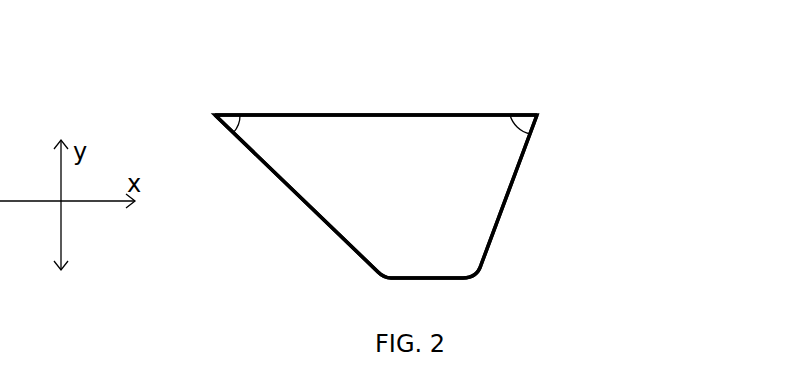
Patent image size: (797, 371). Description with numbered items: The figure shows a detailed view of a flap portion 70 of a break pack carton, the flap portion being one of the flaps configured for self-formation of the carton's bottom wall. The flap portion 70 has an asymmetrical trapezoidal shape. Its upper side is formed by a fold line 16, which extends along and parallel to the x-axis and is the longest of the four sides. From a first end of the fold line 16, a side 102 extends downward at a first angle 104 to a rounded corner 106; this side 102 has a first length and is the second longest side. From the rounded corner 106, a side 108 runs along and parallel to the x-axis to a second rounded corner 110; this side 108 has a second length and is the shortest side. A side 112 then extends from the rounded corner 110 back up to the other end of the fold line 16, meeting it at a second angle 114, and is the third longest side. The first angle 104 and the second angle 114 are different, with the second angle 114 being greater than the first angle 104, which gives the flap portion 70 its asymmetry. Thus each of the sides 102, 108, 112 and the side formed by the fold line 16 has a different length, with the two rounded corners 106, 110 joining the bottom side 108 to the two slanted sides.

The fold line 16 is at (378, 115).
The flap portion 70 is at (427, 226).
The side 102 is at (288, 193).
The first angle 104 is at (250, 127).
The rounded corner 106 is at (365, 283).
The side 108 is at (425, 280).
The rounded corner 110 is at (496, 283).
The side 112 is at (516, 170).
The second angle 114 is at (507, 125).